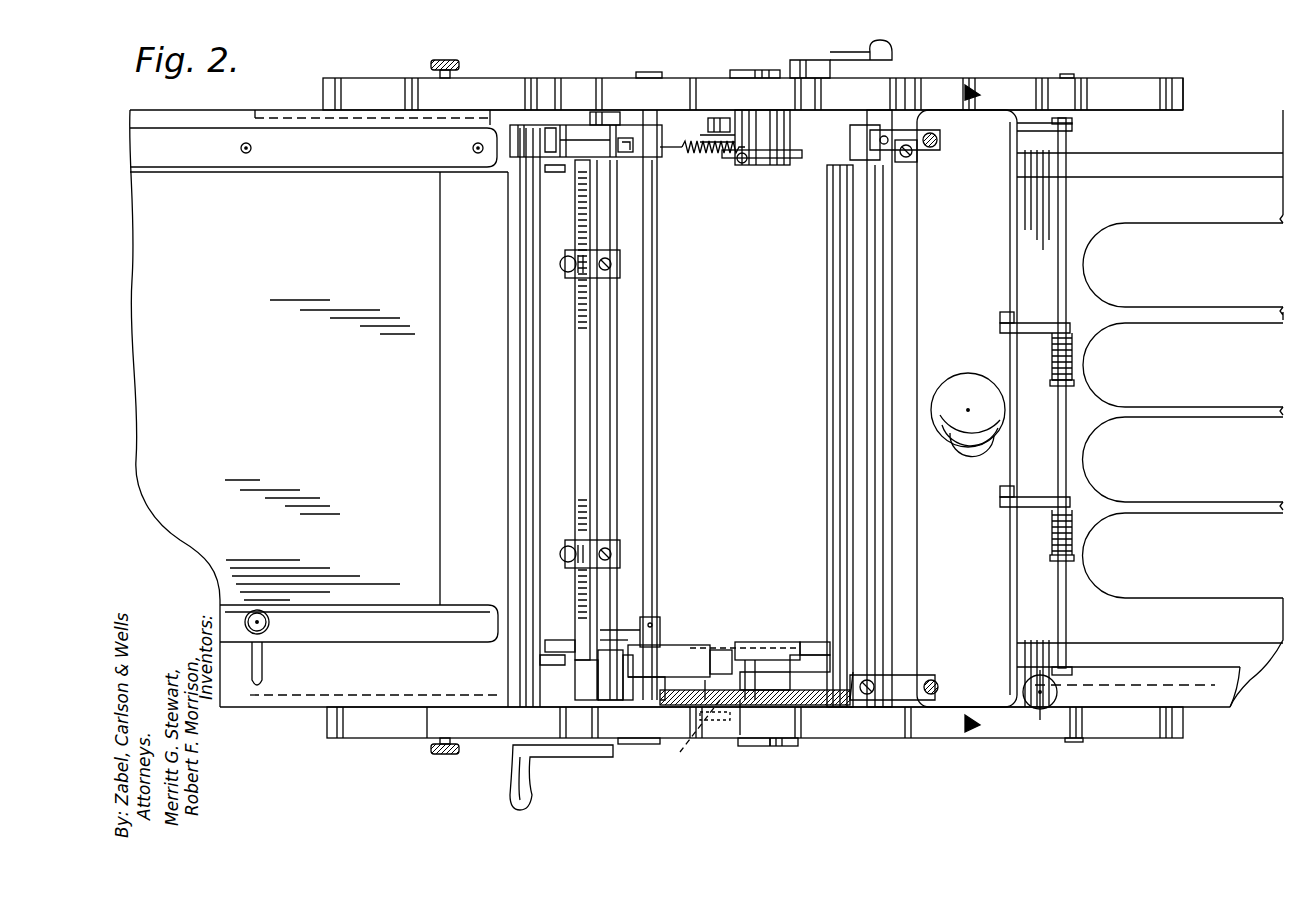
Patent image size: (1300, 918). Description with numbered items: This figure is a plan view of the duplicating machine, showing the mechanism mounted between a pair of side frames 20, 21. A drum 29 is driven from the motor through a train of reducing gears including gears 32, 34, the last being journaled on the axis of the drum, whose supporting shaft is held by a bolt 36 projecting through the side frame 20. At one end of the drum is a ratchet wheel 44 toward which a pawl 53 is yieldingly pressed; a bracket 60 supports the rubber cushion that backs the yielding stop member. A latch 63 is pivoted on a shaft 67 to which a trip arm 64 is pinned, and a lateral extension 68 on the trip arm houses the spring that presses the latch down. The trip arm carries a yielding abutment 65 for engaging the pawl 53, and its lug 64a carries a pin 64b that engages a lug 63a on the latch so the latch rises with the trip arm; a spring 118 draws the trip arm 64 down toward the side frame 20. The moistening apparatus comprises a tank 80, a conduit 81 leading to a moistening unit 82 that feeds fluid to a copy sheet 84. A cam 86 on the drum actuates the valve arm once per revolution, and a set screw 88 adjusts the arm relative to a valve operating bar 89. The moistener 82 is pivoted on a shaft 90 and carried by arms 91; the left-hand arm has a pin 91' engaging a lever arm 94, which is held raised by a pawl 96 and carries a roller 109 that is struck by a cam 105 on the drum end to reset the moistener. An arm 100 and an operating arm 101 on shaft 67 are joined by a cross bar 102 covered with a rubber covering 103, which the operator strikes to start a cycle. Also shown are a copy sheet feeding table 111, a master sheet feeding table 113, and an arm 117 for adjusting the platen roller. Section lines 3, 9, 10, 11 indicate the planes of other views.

The section line 3 is at (305, 722).
The section line 9 is at (378, 773).
The section line 10 is at (757, 797).
The section line 11 is at (377, 230).
The side frame 20 is at (845, 740).
The side frame 21 is at (578, 92).
The drum 29 is at (775, 436).
The reducing gear 32 is at (853, 700).
The reducing gear 34 is at (725, 705).
The bolt 36 is at (778, 748).
The ratchet wheel 44 is at (808, 695).
The pawl 53 is at (760, 690).
The bracket 60 is at (810, 655).
The latch 63 is at (765, 648).
The lug 63a is at (628, 645).
The trip arm 64 is at (680, 645).
The lug 64a is at (630, 700).
The pin 64b is at (640, 630).
The yielding abutment 65 is at (739, 742).
The shaft 67 is at (658, 216).
The lateral extension 68 is at (722, 650).
The tank 80 is at (967, 408).
The conduit 81 is at (590, 700).
The moistening unit 82 is at (578, 586).
The copy sheet 84 is at (435, 475).
The cam 86 is at (783, 165).
The set screw 88 is at (917, 165).
The valve operating bar 89 is at (950, 152).
The shaft 90 is at (563, 172).
The arm 91 is at (392, 422).
The pin 91' is at (335, 147).
The lever arm 94 is at (625, 130).
The pawl 96 is at (618, 120).
The arm 100 is at (535, 128).
The operating arm 101 is at (583, 690).
The cross bar 102 is at (502, 394).
The rubber covering 103 is at (520, 285).
The cam 105 is at (668, 146).
The roller 109 is at (636, 152).
The copy sheet feeding table 111 is at (333, 672).
The master sheet feeding table 113 is at (1165, 500).
The arm 117 is at (595, 768).
The spring 118 is at (685, 752).